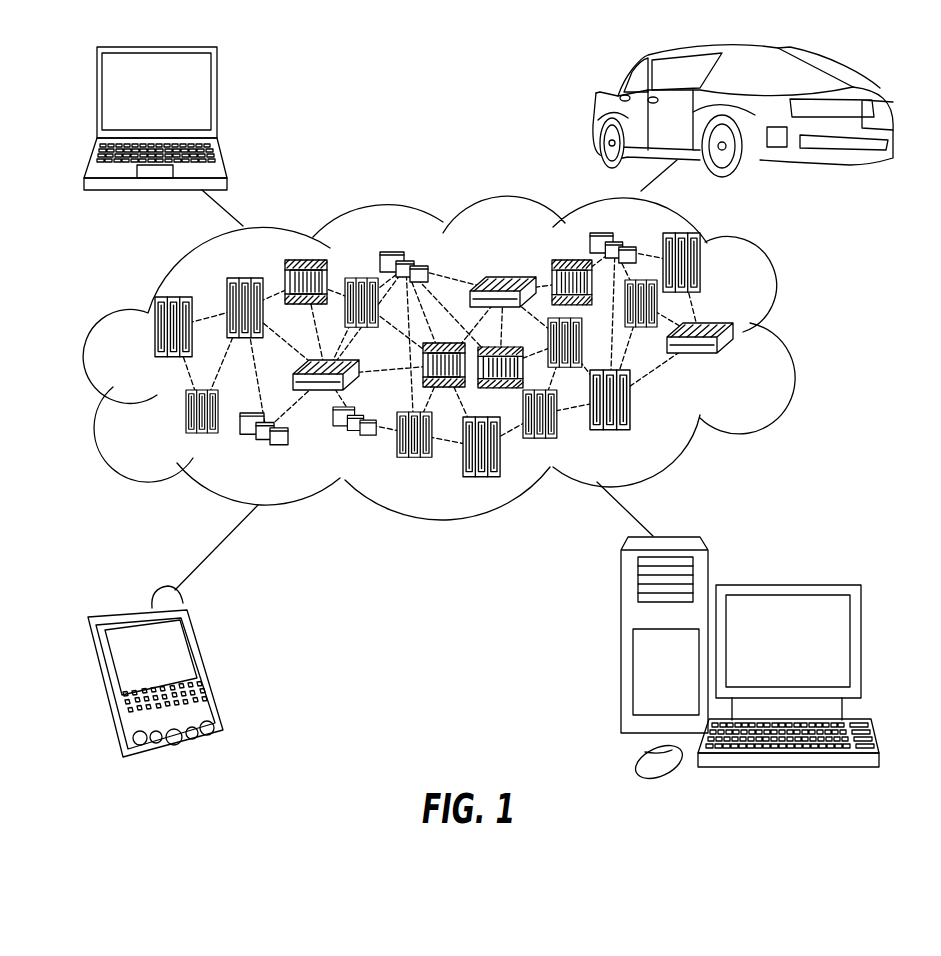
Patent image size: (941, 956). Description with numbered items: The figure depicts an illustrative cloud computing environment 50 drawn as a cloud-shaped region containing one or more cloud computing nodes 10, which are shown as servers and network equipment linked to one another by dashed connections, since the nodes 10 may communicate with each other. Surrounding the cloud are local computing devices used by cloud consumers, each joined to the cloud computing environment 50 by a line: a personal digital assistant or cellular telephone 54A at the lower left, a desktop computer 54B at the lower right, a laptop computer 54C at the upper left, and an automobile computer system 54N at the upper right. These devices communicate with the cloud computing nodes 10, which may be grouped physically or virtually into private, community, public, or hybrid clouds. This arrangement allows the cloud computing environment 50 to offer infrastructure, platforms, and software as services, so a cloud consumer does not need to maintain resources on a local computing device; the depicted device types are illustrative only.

The cloud computing nodes 10 is at (735, 362).
The cloud computing environment 50 is at (777, 333).
The personal digital assistant or cellular telephone 54A is at (196, 668).
The desktop computer 54B is at (786, 585).
The laptop computer 54C is at (219, 100).
The automobile computer system 54N is at (596, 112).